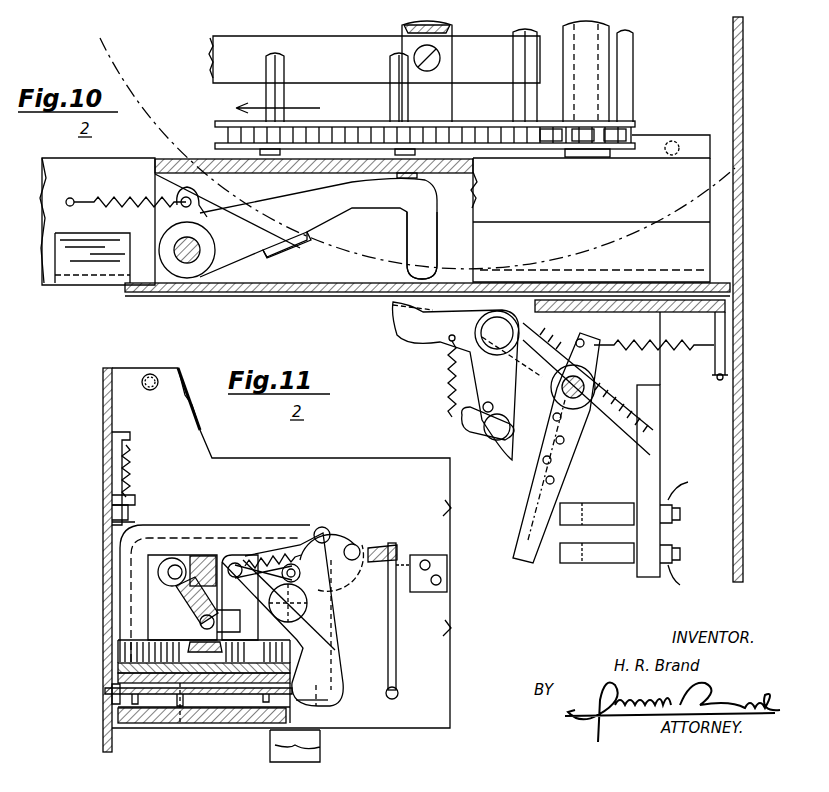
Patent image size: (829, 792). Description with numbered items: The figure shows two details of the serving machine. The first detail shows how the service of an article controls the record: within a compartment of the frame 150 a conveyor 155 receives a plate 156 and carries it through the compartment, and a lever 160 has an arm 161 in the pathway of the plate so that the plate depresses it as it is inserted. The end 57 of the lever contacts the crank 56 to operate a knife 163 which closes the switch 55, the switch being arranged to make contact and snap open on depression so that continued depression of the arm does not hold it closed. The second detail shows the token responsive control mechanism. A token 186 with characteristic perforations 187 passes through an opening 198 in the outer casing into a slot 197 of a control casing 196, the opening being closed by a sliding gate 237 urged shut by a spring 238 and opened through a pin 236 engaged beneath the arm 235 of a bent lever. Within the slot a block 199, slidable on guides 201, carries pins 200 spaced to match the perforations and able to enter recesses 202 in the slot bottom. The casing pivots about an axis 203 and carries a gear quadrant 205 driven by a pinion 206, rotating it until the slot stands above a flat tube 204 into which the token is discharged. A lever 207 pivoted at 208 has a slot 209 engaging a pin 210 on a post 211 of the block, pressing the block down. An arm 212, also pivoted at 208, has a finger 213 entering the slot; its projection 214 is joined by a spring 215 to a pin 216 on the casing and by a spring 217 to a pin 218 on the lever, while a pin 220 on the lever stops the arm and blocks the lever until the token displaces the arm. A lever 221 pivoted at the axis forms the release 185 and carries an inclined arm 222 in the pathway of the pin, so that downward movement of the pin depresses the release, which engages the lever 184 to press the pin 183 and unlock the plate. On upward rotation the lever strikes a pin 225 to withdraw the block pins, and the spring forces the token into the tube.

In FIG. 10, the conveyor 155 is at (464, 125).
In FIG. 10, the plate 156 is at (161, 132).
In FIG. 10, the lever 160 is at (298, 228).
In FIG. 10, the arm 161 is at (279, 252).
In FIG. 10, the end of lever 57 is at (410, 277).
In FIG. 10, the frame 150 is at (742, 195).
In FIG. 10, the crank 56 is at (459, 322).
In FIG. 10, the knife 163 is at (531, 508).
In FIG. 10, the switch 55 is at (598, 515).
In FIG. 11, the pin 225 is at (146, 390).
In FIG. 11, the gate 237 is at (112, 462).
In FIG. 11, the spring 238 is at (132, 464).
In FIG. 11, the pin 236 is at (128, 500).
In FIG. 11, the arm of bent lever 235 is at (130, 508).
In FIG. 11, the control casing 196 is at (213, 540).
In FIG. 11, the block 199 is at (290, 676).
In FIG. 11, the guides 201 is at (165, 657).
In FIG. 11, the opening 198 is at (106, 690).
In FIG. 11, the token 186 is at (108, 696).
In FIG. 11, the perforations 187 is at (200, 703).
In FIG. 11, the pins 200 is at (234, 692).
In FIG. 11, the recesses 202 is at (180, 728).
In FIG. 11, the slot 197 is at (240, 716).
In FIG. 11, the flat tube 204 is at (320, 741).
In FIG. 11, the axis 203 is at (180, 564).
In FIG. 11, the lever 221 is at (160, 574).
In FIG. 11, the inclined arm 222 is at (190, 586).
In FIG. 11, the control mechanism release 185 is at (203, 562).
In FIG. 11, the projection 214 is at (240, 583).
In FIG. 11, the spring 215 is at (273, 552).
In FIG. 11, the pin 220 is at (283, 574).
In FIG. 11, the spring 217 is at (303, 561).
In FIG. 11, the gear quadrant 205 is at (321, 528).
In FIG. 11, the pin 216 is at (336, 528).
In FIG. 11, the pinion 206 is at (346, 534).
In FIG. 11, the lever 207 is at (322, 601).
In FIG. 11, the arm 212 is at (325, 660).
In FIG. 11, the finger 213 is at (312, 691).
In FIG. 11, the pivot 208 is at (289, 605).
In FIG. 11, the slot 209 is at (212, 620).
In FIG. 11, the post 211 is at (196, 616).
In FIG. 11, the pin 210 is at (198, 627).
In FIG. 11, the pin 218 is at (372, 546).
In FIG. 11, the lever 184 is at (397, 640).
In FIG. 11, the pin 183 is at (399, 695).